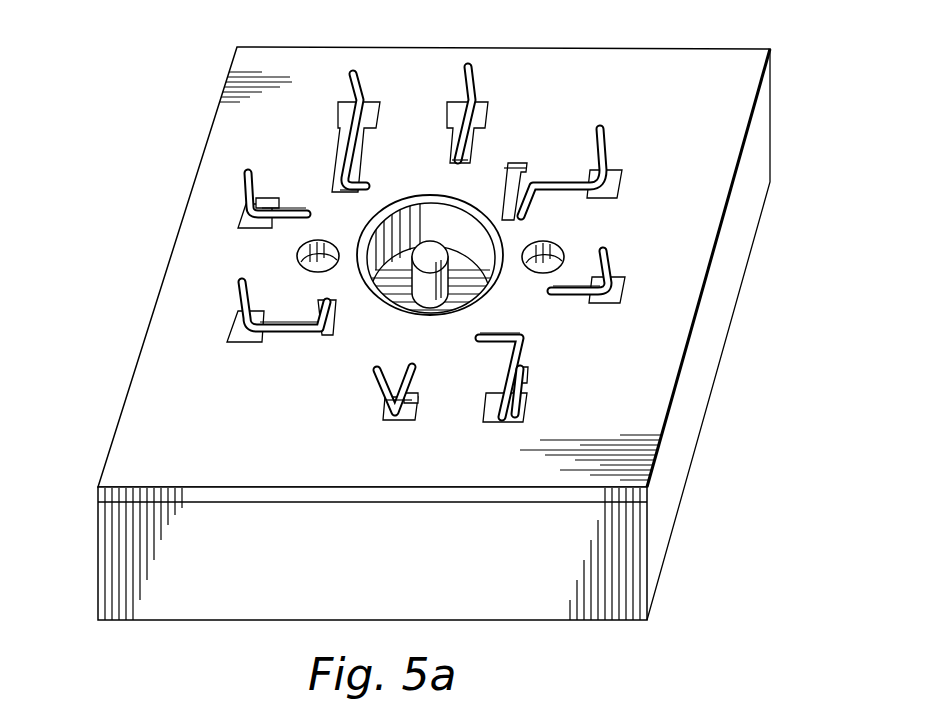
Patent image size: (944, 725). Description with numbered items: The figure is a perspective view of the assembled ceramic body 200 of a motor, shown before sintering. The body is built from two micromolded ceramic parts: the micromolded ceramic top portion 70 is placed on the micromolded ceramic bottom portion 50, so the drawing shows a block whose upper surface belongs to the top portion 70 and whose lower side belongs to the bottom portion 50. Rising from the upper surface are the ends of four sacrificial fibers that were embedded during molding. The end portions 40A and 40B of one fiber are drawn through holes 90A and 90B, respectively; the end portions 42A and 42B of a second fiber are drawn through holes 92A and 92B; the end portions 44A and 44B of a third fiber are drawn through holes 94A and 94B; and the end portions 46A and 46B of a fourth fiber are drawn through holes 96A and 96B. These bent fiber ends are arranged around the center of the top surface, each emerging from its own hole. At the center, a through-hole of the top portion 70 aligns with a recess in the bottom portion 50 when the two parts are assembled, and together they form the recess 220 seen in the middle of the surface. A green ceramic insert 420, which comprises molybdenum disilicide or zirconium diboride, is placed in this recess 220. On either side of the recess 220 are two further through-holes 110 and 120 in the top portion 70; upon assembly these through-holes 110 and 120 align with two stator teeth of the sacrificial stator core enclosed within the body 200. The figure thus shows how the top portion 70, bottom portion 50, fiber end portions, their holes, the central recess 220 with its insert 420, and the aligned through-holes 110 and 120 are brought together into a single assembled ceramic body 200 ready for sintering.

The assembled ceramic body 200 is at (92, 88).
The micromolded ceramic bottom portion 50 is at (762, 153).
The micromolded ceramic top portion 70 is at (755, 113).
The green ceramic insert 420 is at (467, 233).
The recess 220 is at (447, 320).
The through-hole 110 is at (300, 258).
The through-hole 120 is at (548, 248).
The end portion of sacrificial fiber 40A is at (382, 395).
The end portion of sacrificial fiber 40B is at (523, 387).
The end portion of sacrificial fiber 42A is at (610, 264).
The end portion of sacrificial fiber 42B is at (605, 140).
The end portion of sacrificial fiber 44A is at (474, 65).
The end portion of sacrificial fiber 44B is at (357, 78).
The end portion of sacrificial fiber 46A is at (245, 182).
The end portion of sacrificial fiber 46B is at (240, 287).
The hole 90A is at (412, 366).
The hole 90B is at (480, 332).
The hole 92A is at (551, 295).
The hole 92B is at (512, 163).
The hole 94A is at (463, 153).
The hole 94B is at (370, 185).
The hole 96A is at (305, 200).
The hole 96B is at (340, 298).